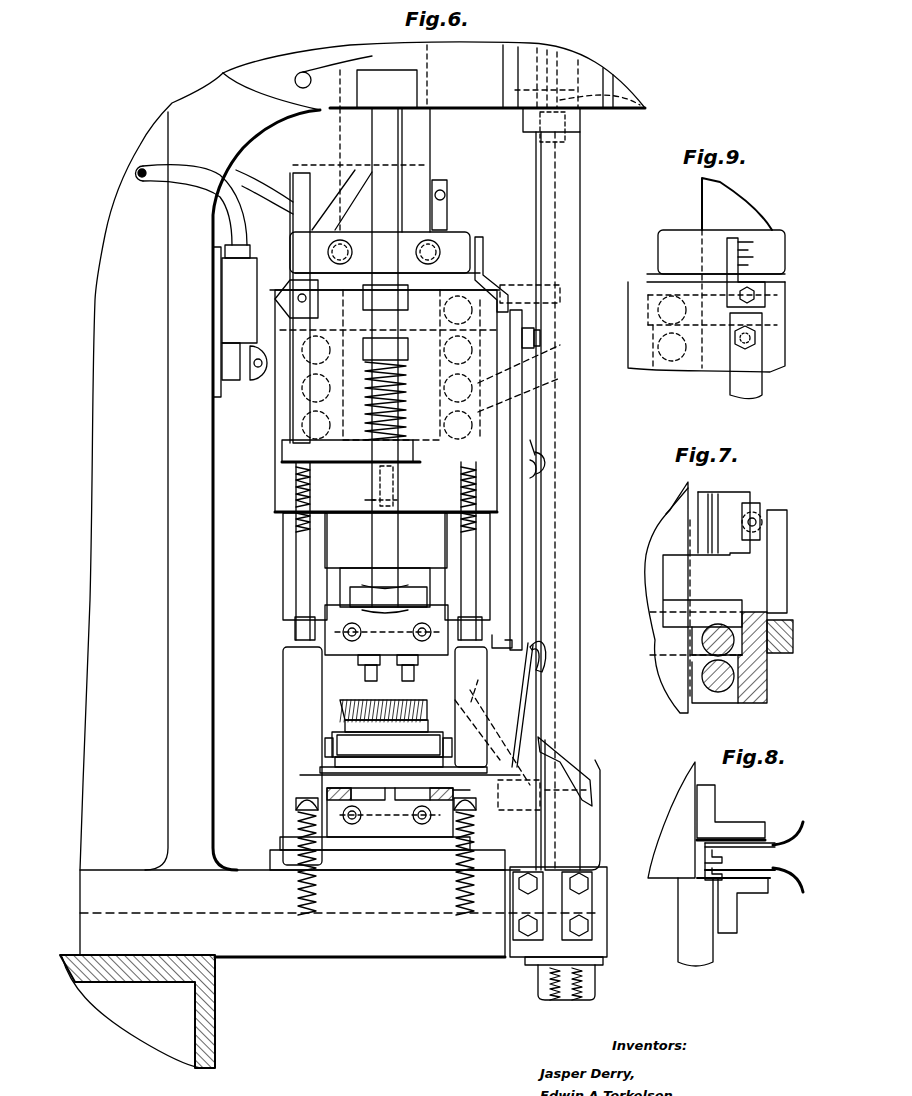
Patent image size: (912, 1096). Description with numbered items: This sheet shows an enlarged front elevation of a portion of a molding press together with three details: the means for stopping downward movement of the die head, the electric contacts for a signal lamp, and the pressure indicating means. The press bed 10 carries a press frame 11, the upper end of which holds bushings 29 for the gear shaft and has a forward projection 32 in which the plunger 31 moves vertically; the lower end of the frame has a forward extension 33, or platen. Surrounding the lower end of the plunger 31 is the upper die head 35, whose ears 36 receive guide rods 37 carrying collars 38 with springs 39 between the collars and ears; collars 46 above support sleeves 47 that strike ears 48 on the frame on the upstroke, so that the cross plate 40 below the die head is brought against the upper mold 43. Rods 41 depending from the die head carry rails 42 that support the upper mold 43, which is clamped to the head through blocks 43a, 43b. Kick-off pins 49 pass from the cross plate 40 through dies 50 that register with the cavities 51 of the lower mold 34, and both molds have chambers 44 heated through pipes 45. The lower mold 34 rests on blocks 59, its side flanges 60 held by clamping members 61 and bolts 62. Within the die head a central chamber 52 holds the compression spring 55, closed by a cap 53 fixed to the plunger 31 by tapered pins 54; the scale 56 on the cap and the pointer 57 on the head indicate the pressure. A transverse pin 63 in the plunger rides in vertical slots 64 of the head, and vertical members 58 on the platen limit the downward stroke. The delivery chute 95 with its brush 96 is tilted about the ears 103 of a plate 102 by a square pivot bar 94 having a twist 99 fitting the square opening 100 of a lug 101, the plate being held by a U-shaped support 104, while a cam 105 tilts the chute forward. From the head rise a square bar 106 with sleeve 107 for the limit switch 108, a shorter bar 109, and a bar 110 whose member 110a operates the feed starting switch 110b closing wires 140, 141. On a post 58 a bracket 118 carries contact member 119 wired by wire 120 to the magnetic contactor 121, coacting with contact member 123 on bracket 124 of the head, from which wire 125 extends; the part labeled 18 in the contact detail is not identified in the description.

In FIG. 6, the press bed 10 is at (216, 1002).
In FIG. 6, the press frame 11 is at (92, 705).
In FIG. 8, the contact block 18 is at (735, 912).
In FIG. 6, the bushings 29 is at (252, 66).
In FIG. 6, the plunger 31 is at (412, 130).
In FIG. 9, the plunger 31 is at (738, 202).
In FIG. 7, the plunger 31 is at (676, 700).
In FIG. 8, the plunger 31 is at (665, 832).
In FIG. 6, the forward projection 32 is at (418, 169).
In FIG. 6, the forward extension 33 is at (374, 955).
In FIG. 6, the lower mold 34 is at (340, 913).
In FIG. 6, the upper die head 35 is at (268, 486).
In FIG. 9, the upper die head 35 is at (637, 370).
In FIG. 7, the upper die head 35 is at (768, 672).
In FIG. 6, the ears 36 is at (282, 455).
In FIG. 6, the guide rods 37 is at (398, 538).
In FIG. 6, the collars 38 is at (408, 348).
In FIG. 6, the springs 39 is at (408, 388).
In FIG. 6, the cross plate 40 is at (416, 582).
In FIG. 6, the rods 41 is at (290, 576).
In FIG. 6, the rails 42 is at (283, 612).
In FIG. 6, the upper mold 43 is at (322, 652).
In FIG. 6, the block 43a is at (325, 542).
In FIG. 6, the block 43b is at (340, 575).
In FIG. 6, the chambers 44 is at (470, 645).
In FIG. 6, the pipes 45 is at (352, 642).
In FIG. 6, the collars 46 is at (380, 288).
In FIG. 6, the sleeves 47 is at (400, 138).
In FIG. 6, the ears 48 is at (410, 92).
In FIG. 6, the kick-off pins 49 is at (400, 668).
In FIG. 6, the dies 50 is at (362, 672).
In FIG. 6, the cavities 51 is at (395, 790).
In FIG. 6, the central chamber 52 is at (575, 372).
In FIG. 9, the central chamber 52 is at (658, 375).
In FIG. 7, the central chamber 52 is at (732, 698).
In FIG. 6, the cap 53 is at (472, 238).
In FIG. 9, the cap 53 is at (660, 258).
In FIG. 7, the cap 53 is at (668, 586).
In FIG. 6, the tapered pins 54 is at (328, 252).
In FIG. 6, the compression spring 55 is at (575, 340).
In FIG. 9, the compression spring 55 is at (688, 372).
In FIG. 7, the compression spring 55 is at (766, 692).
In FIG. 9, the scale 56 is at (760, 240).
In FIG. 6, the pointer 57 is at (486, 250).
In FIG. 9, the pointer 57 is at (727, 258).
In FIG. 6, the vertical members 58 is at (283, 726).
In FIG. 8, the vertical members 58 is at (682, 918).
In FIG. 6, the blocks 59 is at (340, 872).
In FIG. 6, the side flanges 60 is at (325, 845).
In FIG. 6, the clamping members 61 is at (295, 832).
In FIG. 6, the bolts 62 is at (298, 808).
In FIG. 6, the transverse pin 63 is at (394, 475).
In FIG. 6, the vertical slots 64 is at (375, 500).
In FIG. 6, the pivot member 94 is at (540, 332).
In FIG. 9, the pivot member 94 is at (758, 338).
In FIG. 6, the delivery chute 95 is at (332, 742).
In FIG. 6, the brush 96 is at (340, 706).
In FIG. 6, the twist 99 is at (525, 702).
In FIG. 6, the square opening 100 is at (520, 819).
In FIG. 6, the lug 101 is at (600, 788).
In FIG. 6, the plate 102 is at (475, 791).
In FIG. 6, the ears 103 is at (300, 768).
In FIG. 6, the U-shaped support 104 is at (518, 905).
In FIG. 6, the cam 105 is at (565, 745).
In FIG. 6, the square bar 106 is at (536, 165).
In FIG. 6, the sleeve 107 is at (612, 97).
In FIG. 6, the limit switch 108 is at (580, 75).
In FIG. 6, the shorter bar 109 is at (440, 180).
In FIG. 7, the shorter bar 109 is at (752, 503).
In FIG. 6, the bar 110 is at (293, 404).
In FIG. 6, the member 110a is at (290, 298).
In FIG. 6, the limit switch 110b is at (250, 363).
In FIG. 6, the bracket 118 is at (529, 694).
In FIG. 6, the contact member 119 is at (498, 632).
In FIG. 8, the contact member 119 is at (705, 871).
In FIG. 6, the wire 120 is at (542, 642).
In FIG. 8, the wire 120 is at (795, 888).
In FIG. 6, the magnetic contactor 121 is at (539, 441).
In FIG. 6, the contact member 123 is at (534, 474).
In FIG. 8, the contact member 123 is at (705, 849).
In FIG. 8, the bracket 124 is at (725, 830).
In FIG. 6, the wire 125 is at (545, 458).
In FIG. 8, the wire 125 is at (800, 822).
In FIG. 6, the wire 140 is at (140, 170).
In FIG. 6, the wire 141 is at (140, 176).